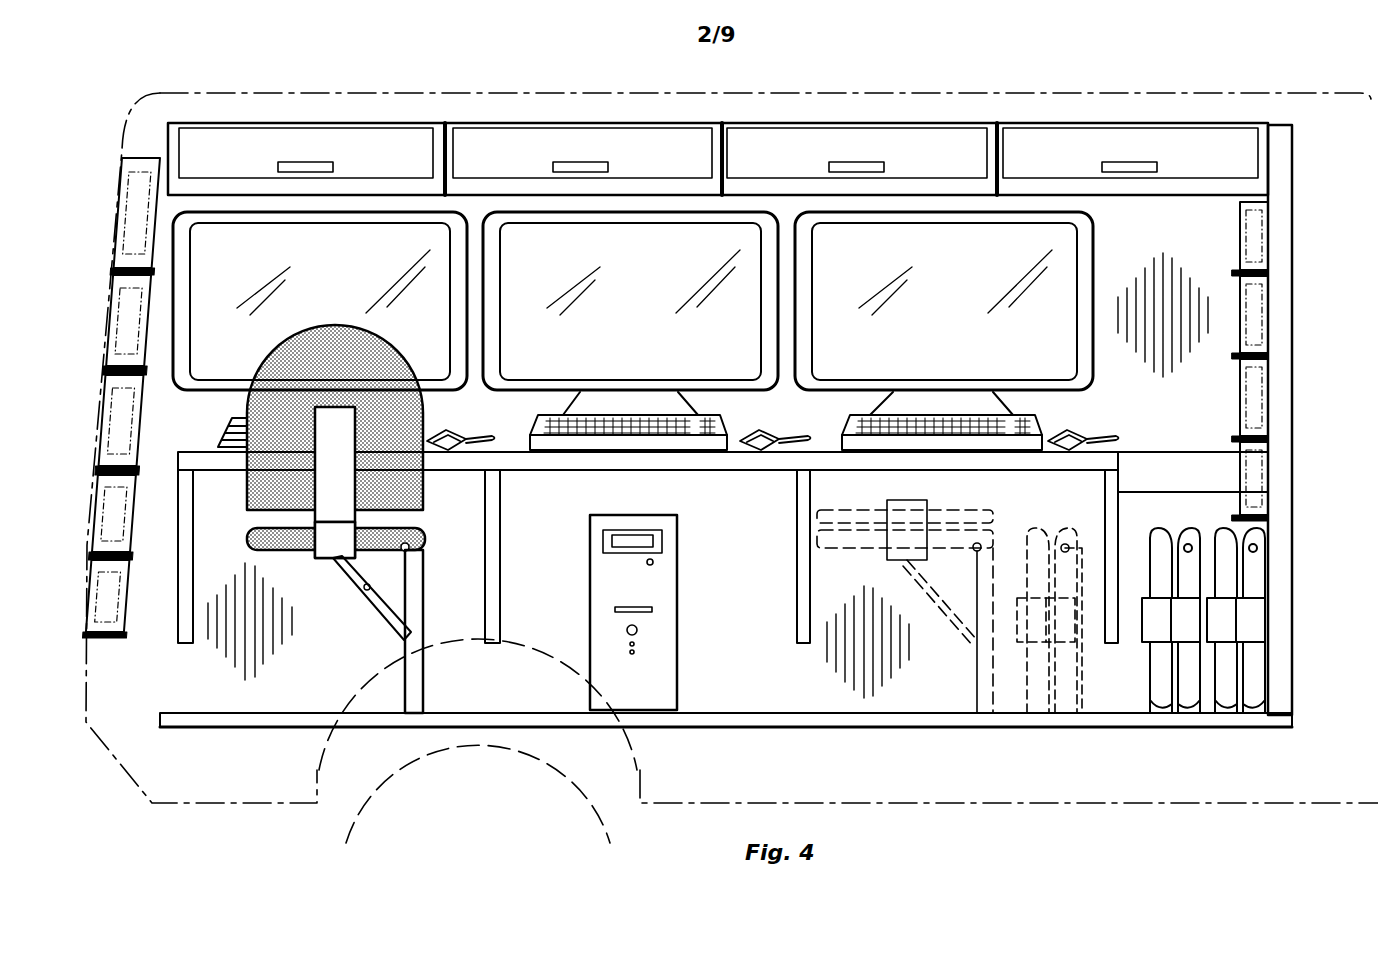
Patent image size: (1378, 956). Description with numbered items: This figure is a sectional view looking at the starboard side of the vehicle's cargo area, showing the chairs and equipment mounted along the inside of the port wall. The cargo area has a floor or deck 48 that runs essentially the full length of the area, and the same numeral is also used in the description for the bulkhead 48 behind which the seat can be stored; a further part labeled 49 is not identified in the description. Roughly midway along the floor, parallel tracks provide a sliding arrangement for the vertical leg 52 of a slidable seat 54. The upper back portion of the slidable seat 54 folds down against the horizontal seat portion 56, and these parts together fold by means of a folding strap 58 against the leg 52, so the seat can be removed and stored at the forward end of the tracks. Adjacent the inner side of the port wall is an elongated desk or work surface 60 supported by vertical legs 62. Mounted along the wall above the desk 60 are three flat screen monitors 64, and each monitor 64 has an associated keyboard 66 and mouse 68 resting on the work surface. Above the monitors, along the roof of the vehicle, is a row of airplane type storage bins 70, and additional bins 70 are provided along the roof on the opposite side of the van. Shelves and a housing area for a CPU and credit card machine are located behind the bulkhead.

The floor or deck 48 is at (1278, 459).
The floor 49 is at (748, 712).
The vertical leg 52 is at (417, 612).
The slidable seat 54 is at (405, 484).
The horizontal seat portion 56 is at (262, 532).
The folding strap 58 is at (380, 605).
The desk or work surface 60 is at (542, 462).
The vertical legs 62 is at (183, 598).
The flat screen monitors 64 is at (348, 287).
The keyboard 66 is at (230, 424).
The mouse 68 is at (452, 430).
The storage bins 70 is at (360, 138).